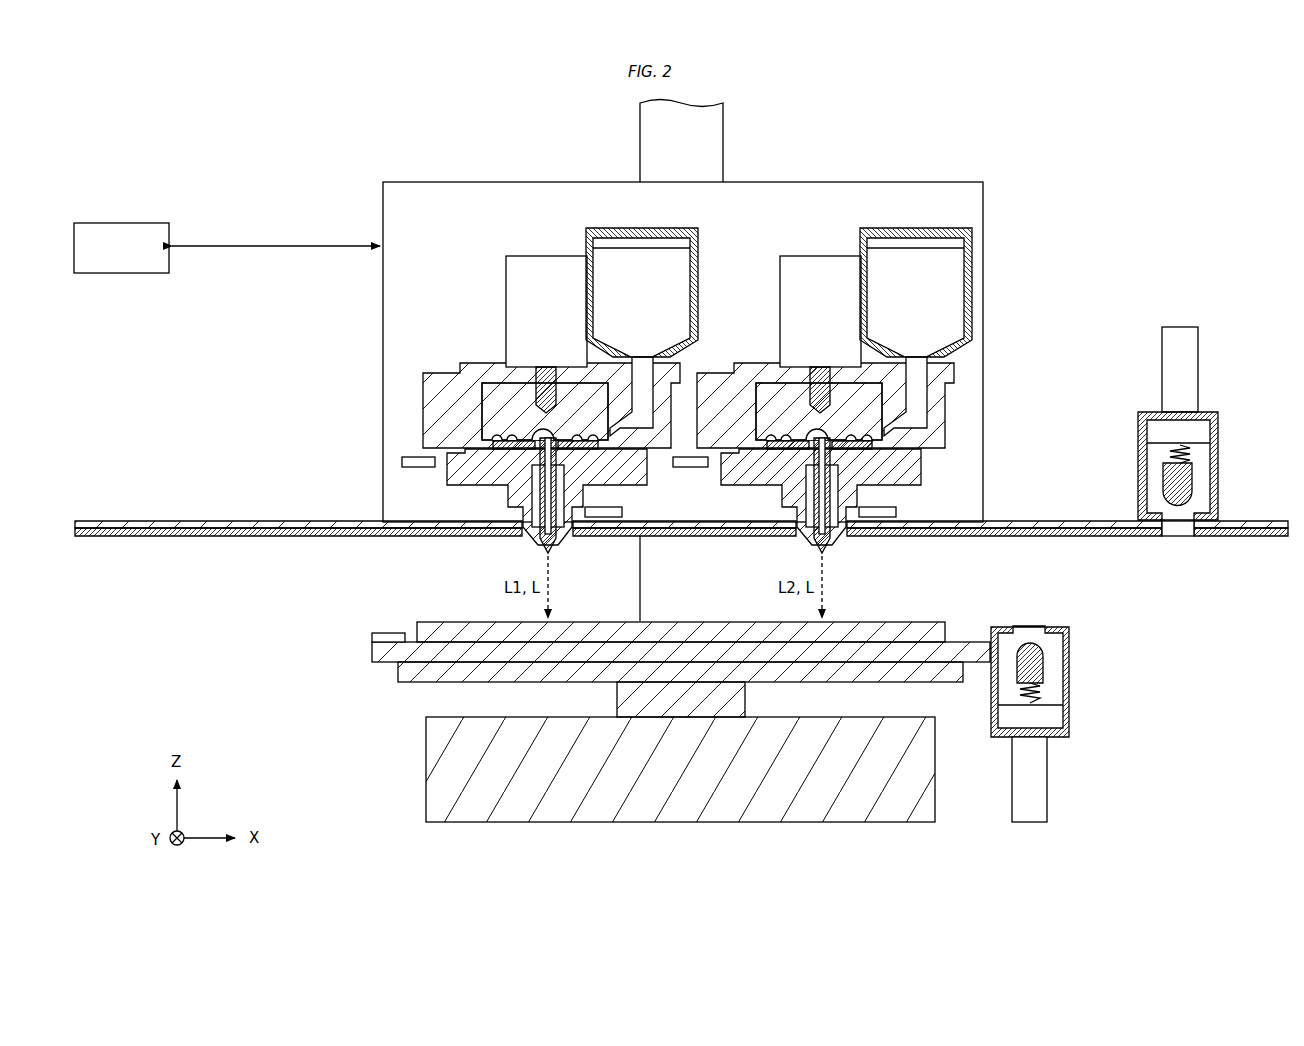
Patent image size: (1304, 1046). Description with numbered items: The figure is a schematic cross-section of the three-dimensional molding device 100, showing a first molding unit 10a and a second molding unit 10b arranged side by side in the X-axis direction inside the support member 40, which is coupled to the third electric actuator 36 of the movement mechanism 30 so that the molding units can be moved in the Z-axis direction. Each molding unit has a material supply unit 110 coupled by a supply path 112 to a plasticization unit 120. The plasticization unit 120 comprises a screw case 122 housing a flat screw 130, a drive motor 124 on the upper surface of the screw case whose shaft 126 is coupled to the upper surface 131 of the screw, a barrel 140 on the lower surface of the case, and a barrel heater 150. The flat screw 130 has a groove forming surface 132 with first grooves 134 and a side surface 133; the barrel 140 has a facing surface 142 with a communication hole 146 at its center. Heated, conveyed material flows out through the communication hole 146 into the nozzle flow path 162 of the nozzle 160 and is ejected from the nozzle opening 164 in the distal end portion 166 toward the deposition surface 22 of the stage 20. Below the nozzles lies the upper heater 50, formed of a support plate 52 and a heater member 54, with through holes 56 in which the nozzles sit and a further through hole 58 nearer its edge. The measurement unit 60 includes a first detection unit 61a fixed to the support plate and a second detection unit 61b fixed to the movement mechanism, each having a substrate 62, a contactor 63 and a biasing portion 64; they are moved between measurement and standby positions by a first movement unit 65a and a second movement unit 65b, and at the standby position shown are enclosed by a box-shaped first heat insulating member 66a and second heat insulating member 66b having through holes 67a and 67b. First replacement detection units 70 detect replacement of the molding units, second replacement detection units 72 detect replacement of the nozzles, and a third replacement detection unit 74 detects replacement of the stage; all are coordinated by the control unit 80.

The three-dimensional molding device 100 is at (1072, 233).
The first molding unit 10a is at (476, 390).
The second molding unit 10b is at (965, 378).
The stage 20 is at (440, 650).
The deposition surface 22 is at (530, 630).
The movement mechanism 30 is at (651, 699).
The third electric actuator 36 is at (705, 146).
The support member 40 is at (998, 182).
The upper heater 50 is at (681, 571).
The support plate 52 is at (205, 530).
The heater member 54 is at (233, 537).
The through hole 56 is at (573, 532).
The through hole 58 is at (1186, 538).
The measurement unit 60 is at (1218, 457).
The first detection unit 61a is at (1218, 424).
The second detection unit 61b is at (1074, 701).
The substrate 62 is at (1178, 445).
The contactor 63 is at (1178, 488).
The biasing portion 64 is at (1182, 455).
The first movement unit 65a is at (1180, 362).
The second movement unit 65b is at (1030, 773).
The first heat insulating member 66a is at (1257, 425).
The second heat insulating member 66b is at (1069, 640).
The through hole 67a is at (1172, 538).
The through hole 67b is at (1030, 630).
The first replacement detection unit 70 is at (418, 462).
The second replacement detection unit 72 is at (612, 517).
The third replacement detection unit 74 is at (385, 636).
The control unit 80 is at (122, 242).
The material supply unit 110 is at (586, 232).
The supply path 112 is at (616, 357).
The plasticization unit 120 is at (418, 414).
The screw case 122 is at (522, 405).
The drive motor 124 is at (535, 322).
The shaft 126 is at (520, 376).
The flat screw 130 is at (505, 395).
The upper surface 131 is at (948, 393).
The groove forming surface 132 is at (944, 440).
The side surface 133 is at (723, 536).
The first groove 134 is at (548, 400).
The barrel 140 is at (505, 445).
The facing surface 142 is at (950, 428).
The communication hole 146 is at (458, 468).
The barrel heater 150 is at (440, 452).
The nozzle 160 is at (560, 480).
The nozzle flow path 162 is at (520, 497).
The nozzle opening 164 is at (542, 552).
The distal end portion 166 is at (550, 540).